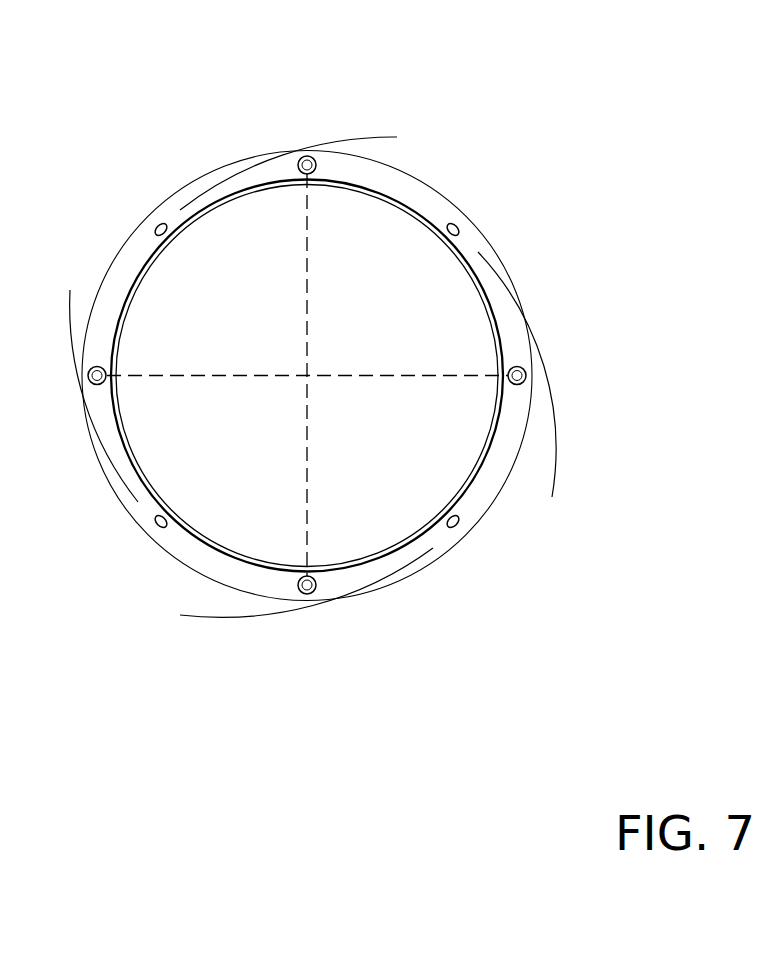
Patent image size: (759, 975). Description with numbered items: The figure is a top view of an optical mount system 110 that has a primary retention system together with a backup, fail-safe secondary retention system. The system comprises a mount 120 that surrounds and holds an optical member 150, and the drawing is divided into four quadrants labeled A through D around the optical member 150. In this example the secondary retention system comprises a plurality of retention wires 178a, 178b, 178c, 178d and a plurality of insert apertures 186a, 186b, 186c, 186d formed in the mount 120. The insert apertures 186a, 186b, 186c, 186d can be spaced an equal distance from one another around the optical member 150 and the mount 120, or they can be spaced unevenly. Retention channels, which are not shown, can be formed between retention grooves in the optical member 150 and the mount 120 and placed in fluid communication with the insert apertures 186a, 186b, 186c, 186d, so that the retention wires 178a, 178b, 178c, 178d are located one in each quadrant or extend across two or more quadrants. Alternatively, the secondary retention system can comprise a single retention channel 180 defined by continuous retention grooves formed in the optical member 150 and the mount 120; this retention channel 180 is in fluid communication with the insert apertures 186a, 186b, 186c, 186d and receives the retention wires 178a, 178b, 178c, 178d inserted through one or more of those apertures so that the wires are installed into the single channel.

The optical mount system 110 is at (528, 116).
The mount 120 is at (482, 492).
The optical member 150 is at (399, 250).
The retention channel 180 is at (523, 308).
The retention wire 178a is at (333, 143).
The retention wire 178b is at (553, 423).
The retention wire 178c is at (240, 614).
The retention wire 178d is at (123, 483).
The insert aperture 186a is at (158, 226).
The insert aperture 186b is at (462, 230).
The insert aperture 186c is at (460, 524).
The insert aperture 186d is at (160, 524).